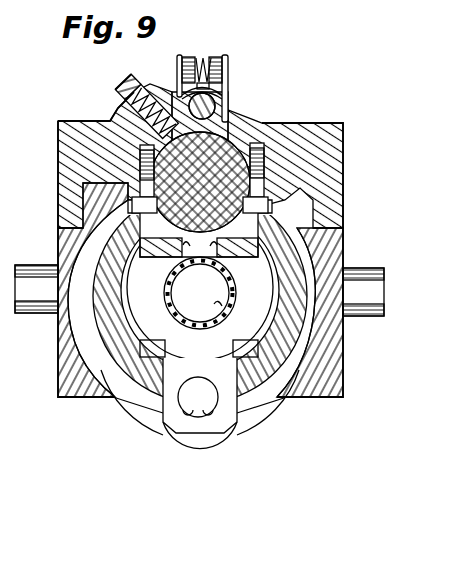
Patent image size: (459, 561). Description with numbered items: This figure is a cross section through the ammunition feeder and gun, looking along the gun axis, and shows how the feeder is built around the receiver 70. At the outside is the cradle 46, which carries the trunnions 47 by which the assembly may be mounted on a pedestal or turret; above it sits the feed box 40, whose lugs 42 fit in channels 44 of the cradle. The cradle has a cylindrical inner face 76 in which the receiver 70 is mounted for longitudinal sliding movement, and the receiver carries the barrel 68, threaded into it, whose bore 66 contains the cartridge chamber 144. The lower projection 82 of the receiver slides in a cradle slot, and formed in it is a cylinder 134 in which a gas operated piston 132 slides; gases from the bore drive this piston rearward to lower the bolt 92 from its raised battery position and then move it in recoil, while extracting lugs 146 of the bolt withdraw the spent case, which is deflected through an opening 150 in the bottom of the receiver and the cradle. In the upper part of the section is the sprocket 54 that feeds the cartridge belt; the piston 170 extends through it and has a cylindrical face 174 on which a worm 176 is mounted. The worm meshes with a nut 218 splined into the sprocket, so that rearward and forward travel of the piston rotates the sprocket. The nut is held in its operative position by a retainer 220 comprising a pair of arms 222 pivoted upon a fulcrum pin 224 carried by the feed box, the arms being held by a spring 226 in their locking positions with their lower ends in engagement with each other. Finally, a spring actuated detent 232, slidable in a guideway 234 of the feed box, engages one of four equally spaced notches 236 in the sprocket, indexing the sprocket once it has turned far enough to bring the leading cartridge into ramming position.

The feed box 40 is at (333, 165).
The lugs 42 is at (74, 222).
The channels 44 is at (72, 230).
The cradle 46 is at (337, 318).
The trunnions 47 is at (28, 313).
The sprocket 54 is at (222, 150).
The bore 66 is at (218, 306).
The barrel 68 is at (262, 296).
The receiver 70 is at (300, 346).
The inner face 76 is at (104, 296).
The lower projection 82 is at (198, 453).
The bolt 92 is at (145, 245).
The gas operated piston 132 is at (207, 417).
The cylinder 134 is at (189, 418).
The cartridge chamber 144 is at (182, 305).
The extracting lugs 146 is at (200, 250).
The opening 150 is at (122, 405).
The piston 170 is at (113, 151).
The cylindrical face 174 is at (146, 153).
The worm 176 is at (252, 150).
The nut 218 is at (166, 118).
The retainer 220 is at (232, 73).
The arms 222 is at (224, 57).
The fulcrum pin 224 is at (200, 93).
The spring 226 is at (198, 70).
The detent 232 is at (130, 101).
The guideway 234 is at (126, 90).
The notches 236 is at (236, 160).